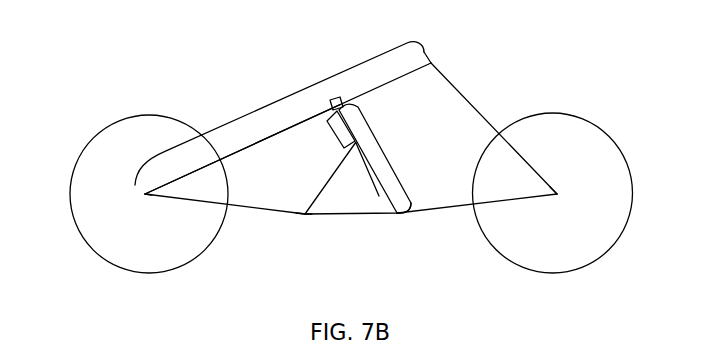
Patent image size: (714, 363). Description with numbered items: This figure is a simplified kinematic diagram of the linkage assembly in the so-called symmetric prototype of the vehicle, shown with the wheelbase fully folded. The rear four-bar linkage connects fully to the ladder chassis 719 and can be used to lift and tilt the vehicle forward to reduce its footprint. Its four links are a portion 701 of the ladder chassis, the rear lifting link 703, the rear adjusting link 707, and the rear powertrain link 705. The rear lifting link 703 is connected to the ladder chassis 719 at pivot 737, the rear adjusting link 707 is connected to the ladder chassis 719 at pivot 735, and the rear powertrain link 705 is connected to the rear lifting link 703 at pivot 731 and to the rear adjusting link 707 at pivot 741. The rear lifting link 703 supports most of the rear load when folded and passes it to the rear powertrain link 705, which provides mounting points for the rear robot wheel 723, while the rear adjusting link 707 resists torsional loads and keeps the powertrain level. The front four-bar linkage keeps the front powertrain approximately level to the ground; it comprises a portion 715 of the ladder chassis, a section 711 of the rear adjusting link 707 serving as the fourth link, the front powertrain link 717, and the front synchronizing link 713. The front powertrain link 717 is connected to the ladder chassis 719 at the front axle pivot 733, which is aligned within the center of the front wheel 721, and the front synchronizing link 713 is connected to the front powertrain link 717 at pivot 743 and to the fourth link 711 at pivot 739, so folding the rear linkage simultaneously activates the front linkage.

The portion of ladder chassis 701 is at (382, 88).
The rear lifting link 703 is at (483, 115).
The rear powertrain link 705 is at (433, 214).
The rear adjusting link 707 is at (387, 162).
The section of rear adjusting link 711 is at (333, 122).
The front synchronizing link 713 is at (313, 204).
The portion of ladder chassis 715 is at (277, 134).
The front powertrain link 717 is at (209, 203).
The ladder chassis 719 is at (289, 100).
The front wheel 721 is at (102, 136).
The rear robot wheel 723 is at (576, 124).
The pivot 731 is at (559, 192).
The front axle pivot 733 is at (144, 195).
The pivot 735 is at (339, 108).
The pivot 737 is at (432, 62).
The pivot 739 is at (379, 195).
The pivot 741 is at (398, 220).
The pivot 743 is at (305, 215).